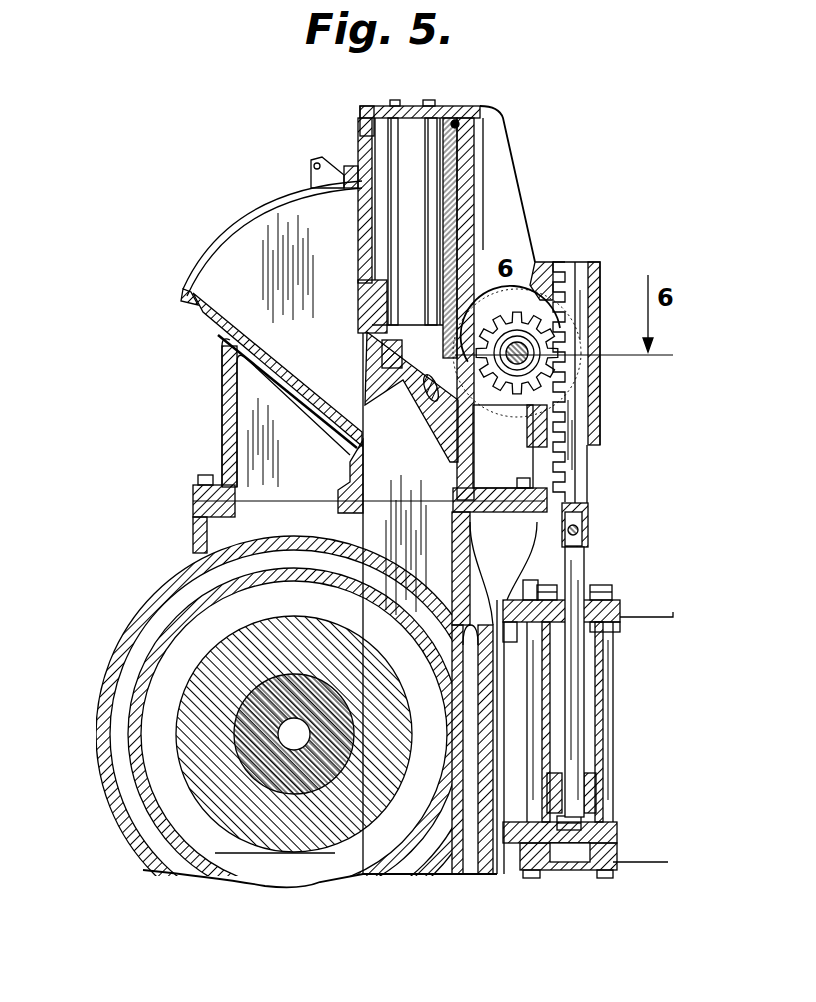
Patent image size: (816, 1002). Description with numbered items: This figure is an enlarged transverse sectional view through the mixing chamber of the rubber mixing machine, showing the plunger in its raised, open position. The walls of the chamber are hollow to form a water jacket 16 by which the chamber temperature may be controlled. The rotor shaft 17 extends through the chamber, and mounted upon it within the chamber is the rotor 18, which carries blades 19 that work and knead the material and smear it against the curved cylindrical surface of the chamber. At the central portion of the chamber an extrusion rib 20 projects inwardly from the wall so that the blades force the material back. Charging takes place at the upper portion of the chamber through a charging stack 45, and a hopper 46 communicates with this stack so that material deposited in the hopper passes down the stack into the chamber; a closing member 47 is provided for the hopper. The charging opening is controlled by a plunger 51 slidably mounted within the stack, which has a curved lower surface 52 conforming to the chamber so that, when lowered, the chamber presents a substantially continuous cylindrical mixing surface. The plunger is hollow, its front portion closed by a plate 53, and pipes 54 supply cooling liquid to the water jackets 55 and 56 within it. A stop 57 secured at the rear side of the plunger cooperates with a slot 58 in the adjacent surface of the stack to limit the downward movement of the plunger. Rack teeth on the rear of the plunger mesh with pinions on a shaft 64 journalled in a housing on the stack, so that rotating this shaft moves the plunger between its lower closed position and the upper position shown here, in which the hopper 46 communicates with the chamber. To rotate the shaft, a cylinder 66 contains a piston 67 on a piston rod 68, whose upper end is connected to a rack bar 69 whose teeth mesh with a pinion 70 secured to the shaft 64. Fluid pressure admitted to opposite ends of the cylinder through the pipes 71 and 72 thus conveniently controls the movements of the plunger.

The water jacket 16 is at (110, 750).
The rotor shaft 17 is at (307, 780).
The rotor 18 is at (266, 840).
The blades 19 is at (274, 882).
The extrusion rib 20 is at (145, 708).
The charging stack 45 is at (342, 490).
The hopper 46 is at (228, 306).
The closing member 47 is at (279, 182).
The plunger 51 is at (412, 108).
The curved lower surface 52 is at (378, 389).
The plate 53 is at (373, 118).
The pipe 54 is at (394, 194).
The water jacket 55 is at (383, 358).
The water jacket 56 is at (428, 400).
The stop 57 is at (457, 121).
The slot 58 is at (468, 195).
The shaft 64 is at (550, 360).
The cylinder 66 is at (604, 710).
The piston 67 is at (598, 797).
The piston rod 68 is at (580, 575).
The rack bar 69 is at (584, 501).
The pinion 70 is at (519, 318).
The pipe 71 is at (673, 617).
The pipe 72 is at (660, 862).